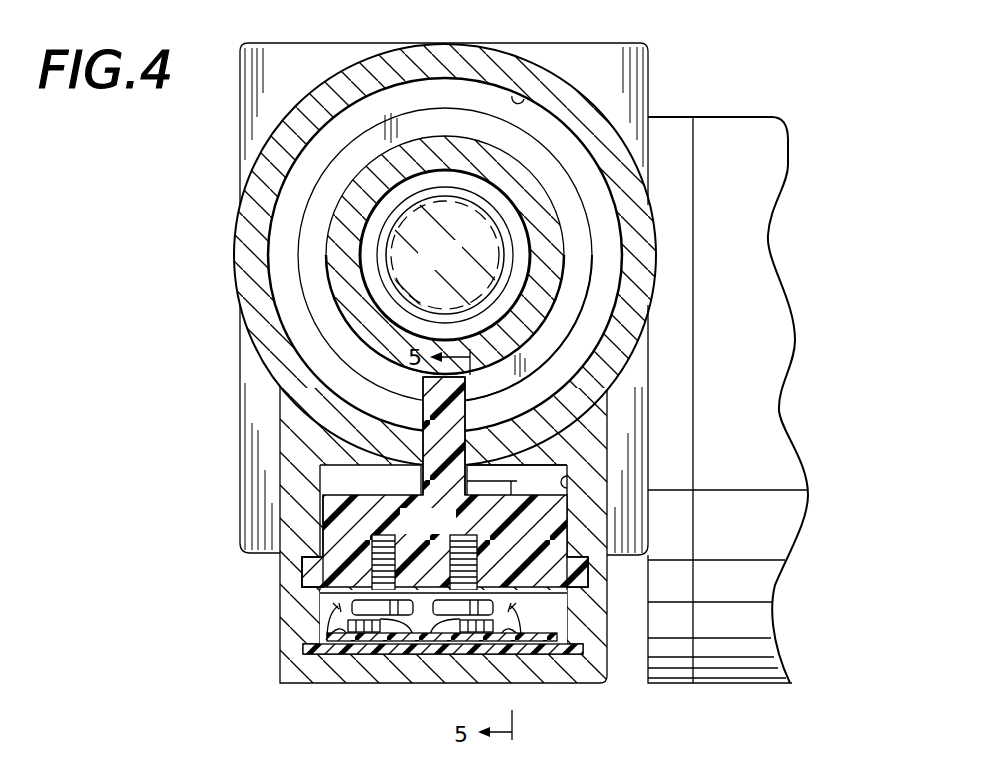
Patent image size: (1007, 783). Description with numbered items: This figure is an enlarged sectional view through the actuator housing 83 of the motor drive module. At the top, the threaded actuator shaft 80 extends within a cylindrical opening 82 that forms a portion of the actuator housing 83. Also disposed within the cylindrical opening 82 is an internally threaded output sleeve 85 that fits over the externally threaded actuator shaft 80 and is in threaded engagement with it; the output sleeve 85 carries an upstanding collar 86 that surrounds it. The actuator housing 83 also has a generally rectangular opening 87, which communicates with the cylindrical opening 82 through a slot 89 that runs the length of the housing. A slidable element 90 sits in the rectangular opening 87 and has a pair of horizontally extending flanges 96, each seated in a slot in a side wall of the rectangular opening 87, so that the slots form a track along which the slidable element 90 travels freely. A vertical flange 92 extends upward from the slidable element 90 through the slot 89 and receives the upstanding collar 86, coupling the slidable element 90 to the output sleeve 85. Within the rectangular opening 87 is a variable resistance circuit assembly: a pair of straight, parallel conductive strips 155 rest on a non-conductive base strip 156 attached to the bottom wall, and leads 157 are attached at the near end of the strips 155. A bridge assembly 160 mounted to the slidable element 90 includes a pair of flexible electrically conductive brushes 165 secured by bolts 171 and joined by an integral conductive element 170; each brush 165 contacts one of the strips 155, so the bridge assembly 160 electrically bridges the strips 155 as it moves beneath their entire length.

The threaded actuator shaft 80 is at (460, 271).
The cylindrical opening 82 is at (518, 97).
The actuator housing 83 is at (613, 389).
The internally threaded output sleeve 85 is at (328, 240).
The upstanding collar 86 is at (557, 172).
The rectangular opening 87 is at (566, 492).
The slot 89 is at (523, 431).
The slidable element 90 is at (358, 494).
The vertical flange 92 is at (421, 443).
The horizontally extending flanges 96 is at (310, 572).
The conductive strips 155 is at (328, 612).
The non-conductive base strip 156 is at (540, 634).
The leads 157 is at (512, 652).
The bridge assembly 160 is at (372, 632).
The flexible electrically conductive brushes 165 is at (450, 618).
The conductive element 170 is at (325, 547).
The bolts 171 is at (444, 587).